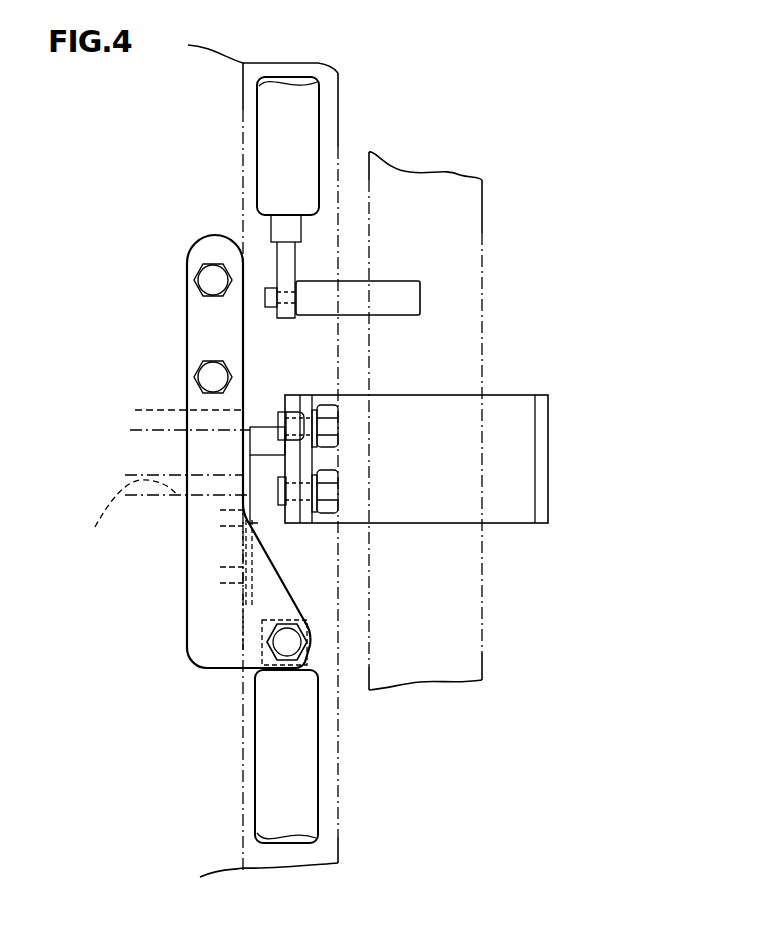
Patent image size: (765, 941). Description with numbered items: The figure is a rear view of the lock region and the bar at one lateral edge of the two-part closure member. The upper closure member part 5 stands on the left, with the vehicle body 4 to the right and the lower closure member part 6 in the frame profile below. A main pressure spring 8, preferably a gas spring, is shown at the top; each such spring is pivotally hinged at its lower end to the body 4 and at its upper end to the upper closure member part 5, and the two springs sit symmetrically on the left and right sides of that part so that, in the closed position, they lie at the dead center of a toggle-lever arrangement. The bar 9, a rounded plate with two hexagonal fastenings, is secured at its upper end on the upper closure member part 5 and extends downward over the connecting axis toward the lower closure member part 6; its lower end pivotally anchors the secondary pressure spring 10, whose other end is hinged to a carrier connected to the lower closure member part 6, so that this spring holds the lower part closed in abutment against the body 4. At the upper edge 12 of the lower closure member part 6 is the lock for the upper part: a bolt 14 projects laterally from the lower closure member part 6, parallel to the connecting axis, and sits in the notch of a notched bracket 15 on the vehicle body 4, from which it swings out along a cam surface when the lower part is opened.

The vehicle body 4 is at (438, 240).
The upper closure member part 5 is at (148, 184).
The lower closure member part 6 is at (322, 842).
The main pressure spring 8 is at (300, 145).
The bar 9 is at (217, 627).
The secondary pressure spring 10 is at (297, 757).
The upper edge 12 is at (126, 512).
The bolt 14 is at (262, 440).
The notched bracket 15 is at (345, 417).